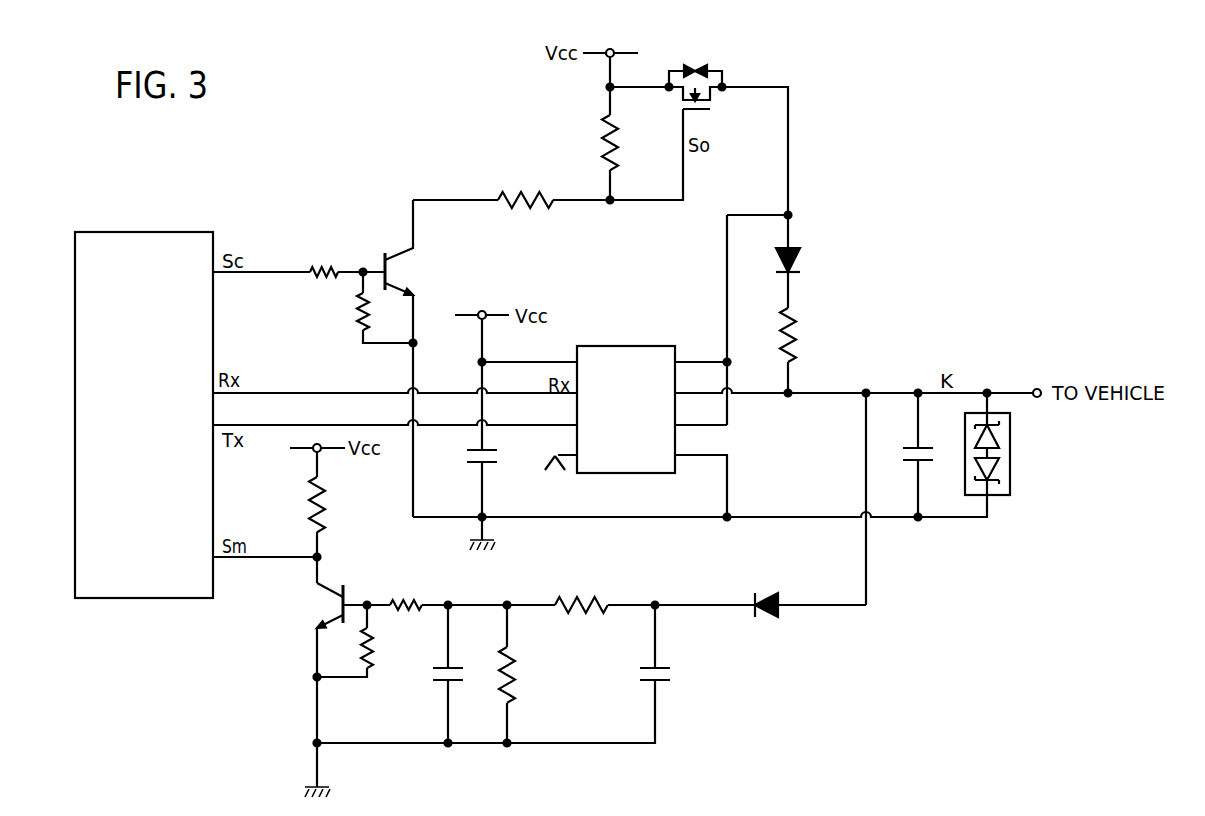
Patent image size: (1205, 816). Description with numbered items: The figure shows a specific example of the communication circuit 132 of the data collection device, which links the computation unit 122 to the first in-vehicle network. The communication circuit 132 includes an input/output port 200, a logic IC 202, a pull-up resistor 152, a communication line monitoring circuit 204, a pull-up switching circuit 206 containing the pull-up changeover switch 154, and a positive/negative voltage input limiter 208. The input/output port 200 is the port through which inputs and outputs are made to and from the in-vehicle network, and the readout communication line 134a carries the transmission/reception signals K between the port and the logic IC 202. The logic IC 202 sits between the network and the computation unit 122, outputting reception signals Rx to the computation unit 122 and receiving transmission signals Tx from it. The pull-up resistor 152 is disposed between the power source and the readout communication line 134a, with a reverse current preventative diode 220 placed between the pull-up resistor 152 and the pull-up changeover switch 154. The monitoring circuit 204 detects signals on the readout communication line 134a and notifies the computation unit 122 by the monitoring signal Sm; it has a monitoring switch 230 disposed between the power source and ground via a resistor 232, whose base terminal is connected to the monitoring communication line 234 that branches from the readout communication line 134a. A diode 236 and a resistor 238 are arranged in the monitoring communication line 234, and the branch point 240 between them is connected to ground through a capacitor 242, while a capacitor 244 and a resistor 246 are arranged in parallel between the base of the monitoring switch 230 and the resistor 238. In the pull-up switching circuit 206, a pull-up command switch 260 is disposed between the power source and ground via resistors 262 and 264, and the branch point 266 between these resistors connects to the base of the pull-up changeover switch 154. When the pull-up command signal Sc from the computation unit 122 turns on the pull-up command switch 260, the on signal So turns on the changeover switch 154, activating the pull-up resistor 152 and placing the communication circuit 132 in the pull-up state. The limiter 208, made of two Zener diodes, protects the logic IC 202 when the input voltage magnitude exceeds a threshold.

The computation unit 122 is at (141, 232).
The communication circuit 132 is at (317, 121).
The readout communication line 134a is at (815, 400).
The pull-up resistor 152 is at (800, 352).
The pull-up changeover switch 154 is at (722, 71).
The input/output port 200 is at (1037, 386).
The logic IC 202 is at (640, 345).
The communication line monitoring circuit 204 is at (588, 570).
The pull-up switching circuit 206 is at (455, 178).
The positive/negative voltage input limiter 208 is at (1012, 475).
The reverse current preventative diode 220 is at (800, 250).
The monitoring switch 230 is at (347, 590).
The resistor 232 is at (312, 490).
The monitoring communication line 234 is at (870, 558).
The diode 236 is at (780, 615).
The resistor 238 is at (608, 612).
The branch point 240 is at (660, 600).
The capacitor 242 is at (660, 687).
The capacitor 244 is at (440, 687).
The resistor 246 is at (513, 692).
The pull-up command switch 260 is at (396, 250).
The resistor 262 is at (602, 125).
The resistor 264 is at (503, 218).
The branch point 266 is at (612, 205).